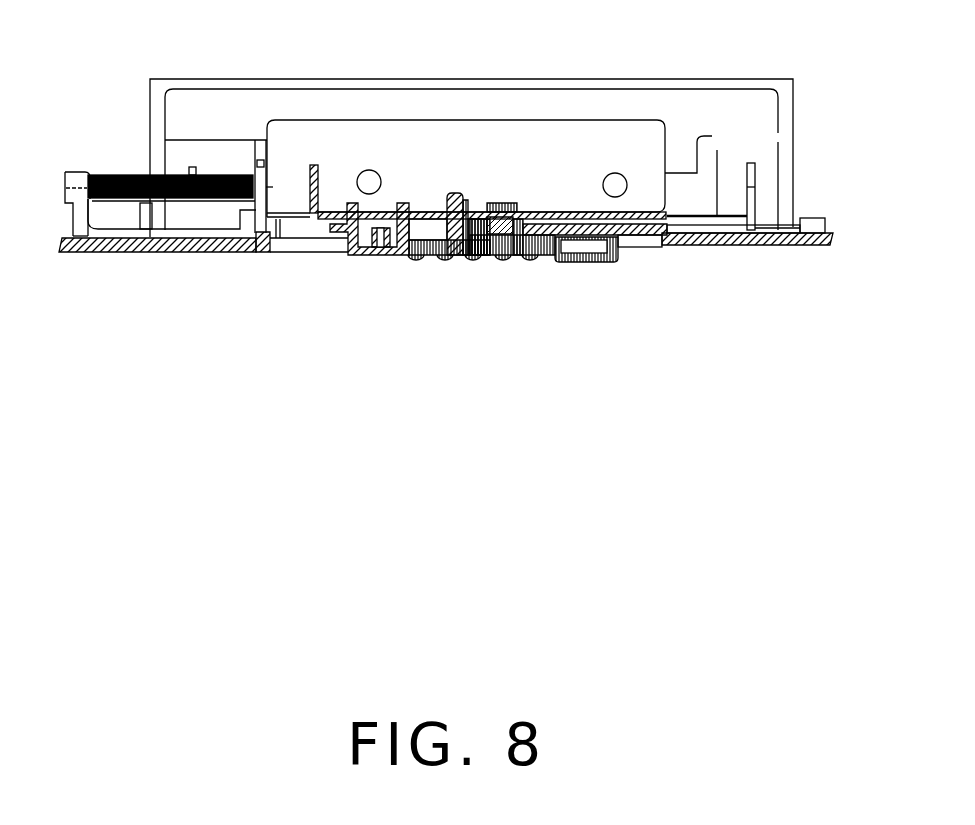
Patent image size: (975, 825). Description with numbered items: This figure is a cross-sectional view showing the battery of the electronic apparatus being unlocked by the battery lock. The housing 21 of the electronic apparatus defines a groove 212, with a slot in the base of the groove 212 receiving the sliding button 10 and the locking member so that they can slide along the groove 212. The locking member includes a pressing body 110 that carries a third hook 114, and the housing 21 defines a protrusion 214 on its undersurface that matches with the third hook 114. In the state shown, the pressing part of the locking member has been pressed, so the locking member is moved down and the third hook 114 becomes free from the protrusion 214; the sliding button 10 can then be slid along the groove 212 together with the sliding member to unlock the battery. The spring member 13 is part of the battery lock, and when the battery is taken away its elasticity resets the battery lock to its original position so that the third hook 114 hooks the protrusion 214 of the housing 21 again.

The sliding button 10 is at (526, 233).
The pressing body 110 is at (390, 246).
The third hook 114 is at (333, 228).
The spring member 13 is at (125, 175).
The housing 21 is at (116, 253).
The groove 212 is at (297, 228).
The protrusion 214 is at (257, 252).